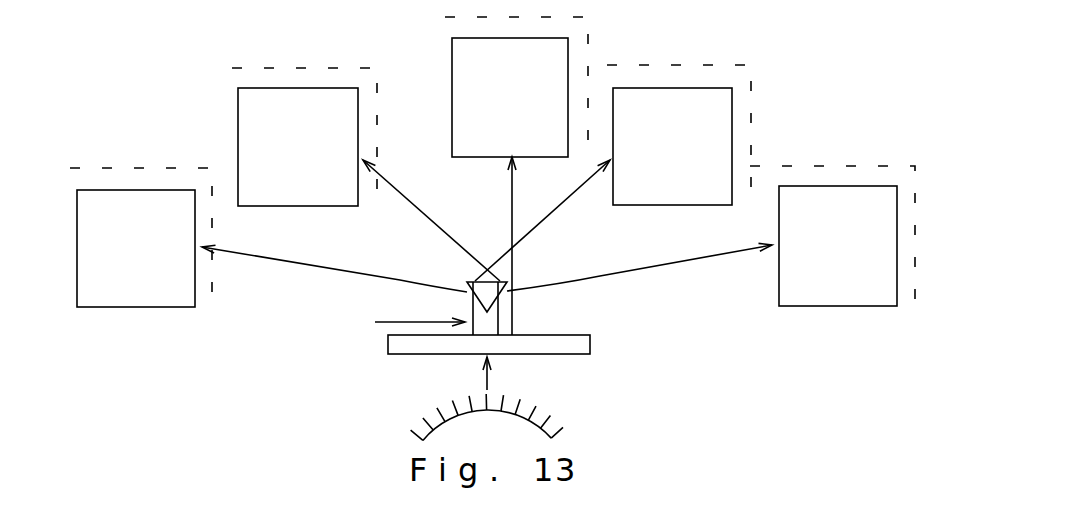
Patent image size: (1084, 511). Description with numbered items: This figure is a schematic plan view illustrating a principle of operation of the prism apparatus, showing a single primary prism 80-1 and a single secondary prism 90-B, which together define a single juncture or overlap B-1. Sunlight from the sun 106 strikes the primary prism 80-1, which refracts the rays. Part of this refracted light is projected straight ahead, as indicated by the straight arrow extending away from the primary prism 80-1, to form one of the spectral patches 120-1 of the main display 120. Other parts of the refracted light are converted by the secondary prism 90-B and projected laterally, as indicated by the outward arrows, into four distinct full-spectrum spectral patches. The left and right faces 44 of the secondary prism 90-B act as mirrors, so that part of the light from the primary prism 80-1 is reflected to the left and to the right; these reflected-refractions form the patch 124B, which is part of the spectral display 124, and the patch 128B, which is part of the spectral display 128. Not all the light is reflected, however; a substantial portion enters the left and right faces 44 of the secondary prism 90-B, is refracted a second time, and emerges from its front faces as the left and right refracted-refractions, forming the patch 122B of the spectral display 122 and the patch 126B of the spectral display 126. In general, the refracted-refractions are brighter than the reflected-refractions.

The main display 120 is at (590, 45).
The spectral patch 120-1 is at (511, 97).
The spectral display 122 is at (344, 68).
The left refracted-refraction patch 122B is at (348, 127).
The spectral display 124 is at (184, 168).
The left reflected-refraction patch 124B is at (185, 228).
The spectral display 126 is at (753, 68).
The right refracted-refraction patch 126B is at (723, 122).
The spectral display 128 is at (913, 166).
The right reflected-refraction patch 128B is at (890, 224).
The rectangular faces 44 is at (473, 303).
The secondary prism 90-B is at (477, 287).
The juncture B-1 is at (386, 323).
The primary prism 80-1 is at (453, 354).
The sun 106 is at (534, 415).